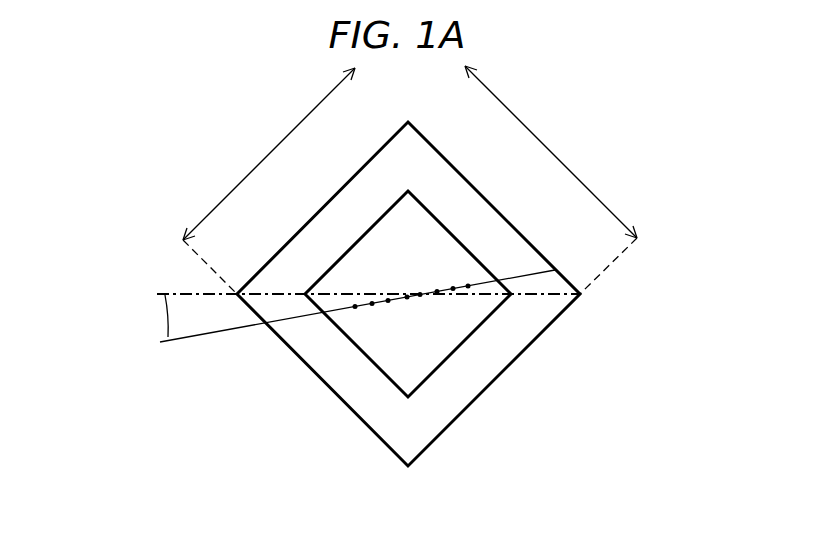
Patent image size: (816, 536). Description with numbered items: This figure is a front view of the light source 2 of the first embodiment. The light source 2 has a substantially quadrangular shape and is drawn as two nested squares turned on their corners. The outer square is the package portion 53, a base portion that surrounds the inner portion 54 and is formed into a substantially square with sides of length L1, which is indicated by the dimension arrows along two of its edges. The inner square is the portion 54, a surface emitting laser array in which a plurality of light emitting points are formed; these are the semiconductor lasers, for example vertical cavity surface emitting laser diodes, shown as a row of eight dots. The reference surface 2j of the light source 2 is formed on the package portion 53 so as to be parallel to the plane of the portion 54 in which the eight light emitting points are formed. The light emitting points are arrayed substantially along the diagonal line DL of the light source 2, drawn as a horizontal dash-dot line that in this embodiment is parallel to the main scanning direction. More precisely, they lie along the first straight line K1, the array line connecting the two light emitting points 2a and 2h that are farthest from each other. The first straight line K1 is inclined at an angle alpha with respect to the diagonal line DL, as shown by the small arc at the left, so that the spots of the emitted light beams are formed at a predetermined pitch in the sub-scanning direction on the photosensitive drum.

The light source 2 is at (429, 294).
The light emitting point 2a is at (355, 306).
The light emitting point 2h is at (468, 286).
The reference surface 2j is at (485, 363).
The package portion 53 is at (518, 335).
The portion (surface emitting laser array) 54 is at (426, 345).
The diagonal line DL is at (325, 250).
The first straight line K1 is at (198, 337).
The side length L1 is at (410, 180).